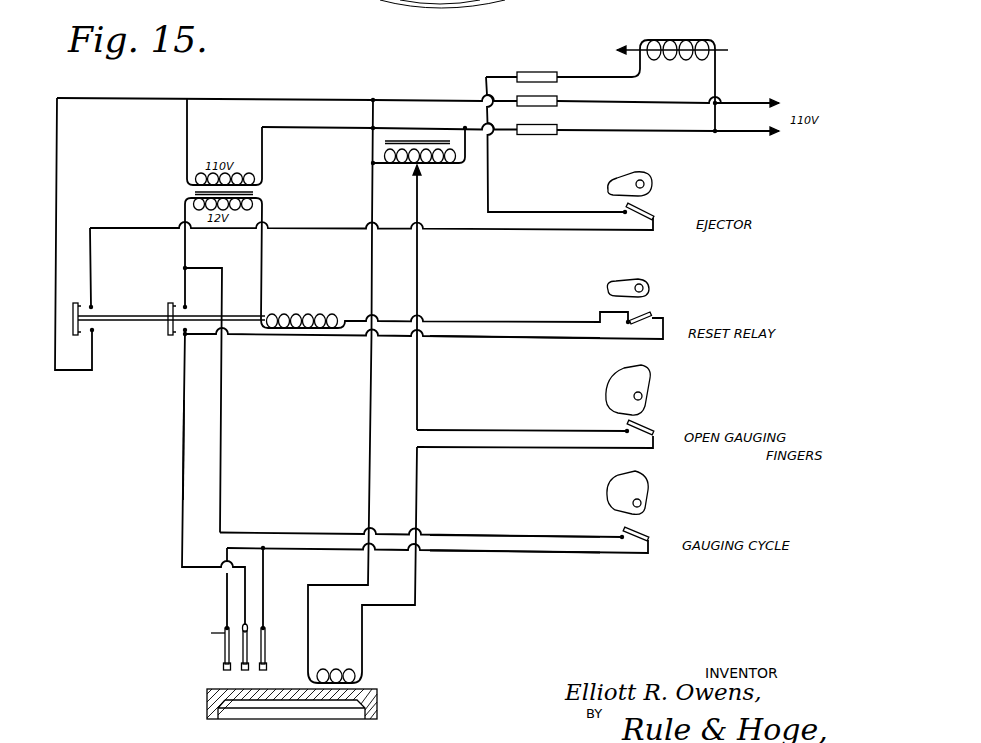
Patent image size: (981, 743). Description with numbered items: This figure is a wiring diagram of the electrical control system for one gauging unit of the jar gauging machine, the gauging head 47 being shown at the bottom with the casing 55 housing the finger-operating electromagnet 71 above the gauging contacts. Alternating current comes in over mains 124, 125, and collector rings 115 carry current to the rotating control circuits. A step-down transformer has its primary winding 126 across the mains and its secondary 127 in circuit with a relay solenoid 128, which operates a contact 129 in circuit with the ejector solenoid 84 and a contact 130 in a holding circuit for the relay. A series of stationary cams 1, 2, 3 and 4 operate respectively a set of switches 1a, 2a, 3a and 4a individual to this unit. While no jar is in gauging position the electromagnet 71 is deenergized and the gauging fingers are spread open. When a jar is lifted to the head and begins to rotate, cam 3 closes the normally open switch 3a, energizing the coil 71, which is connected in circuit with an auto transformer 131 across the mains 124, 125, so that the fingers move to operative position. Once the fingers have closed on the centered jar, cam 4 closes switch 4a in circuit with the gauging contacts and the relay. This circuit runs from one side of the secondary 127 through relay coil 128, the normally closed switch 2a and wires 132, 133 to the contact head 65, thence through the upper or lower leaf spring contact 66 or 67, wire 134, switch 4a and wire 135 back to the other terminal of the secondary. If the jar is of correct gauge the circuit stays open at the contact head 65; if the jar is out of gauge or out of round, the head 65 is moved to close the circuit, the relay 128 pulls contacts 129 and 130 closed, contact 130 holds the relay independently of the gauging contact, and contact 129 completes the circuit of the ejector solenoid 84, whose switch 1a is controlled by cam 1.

The solenoid 84 is at (687, 46).
The collector rings 115 is at (528, 108).
The main 124 is at (756, 103).
The main 125 is at (748, 134).
The cam 1 is at (627, 178).
The switch 1a is at (655, 216).
The cam 2 is at (633, 281).
The switch 2a is at (655, 313).
The cam 3 is at (642, 379).
The switch 3a is at (654, 431).
The cam 4 is at (634, 486).
The switch 4a is at (650, 536).
The primary winding 126 is at (253, 182).
The secondary winding 127 is at (255, 204).
The relay solenoid 128 is at (300, 319).
The contact 129 is at (72, 318).
The contact 130 is at (164, 329).
The auto transformer 131 is at (440, 168).
The wire 132 is at (520, 340).
The wire 133 is at (182, 437).
The wire 134 is at (487, 554).
The wire 135 is at (492, 531).
The lower leaf spring contact arm 67 is at (226, 664).
The contact head 65 is at (243, 668).
The upper leaf spring contact arm 66 is at (268, 665).
The electromagnet 71 is at (330, 672).
The gauging head 47 is at (410, 647).
The casing 55 is at (378, 712).